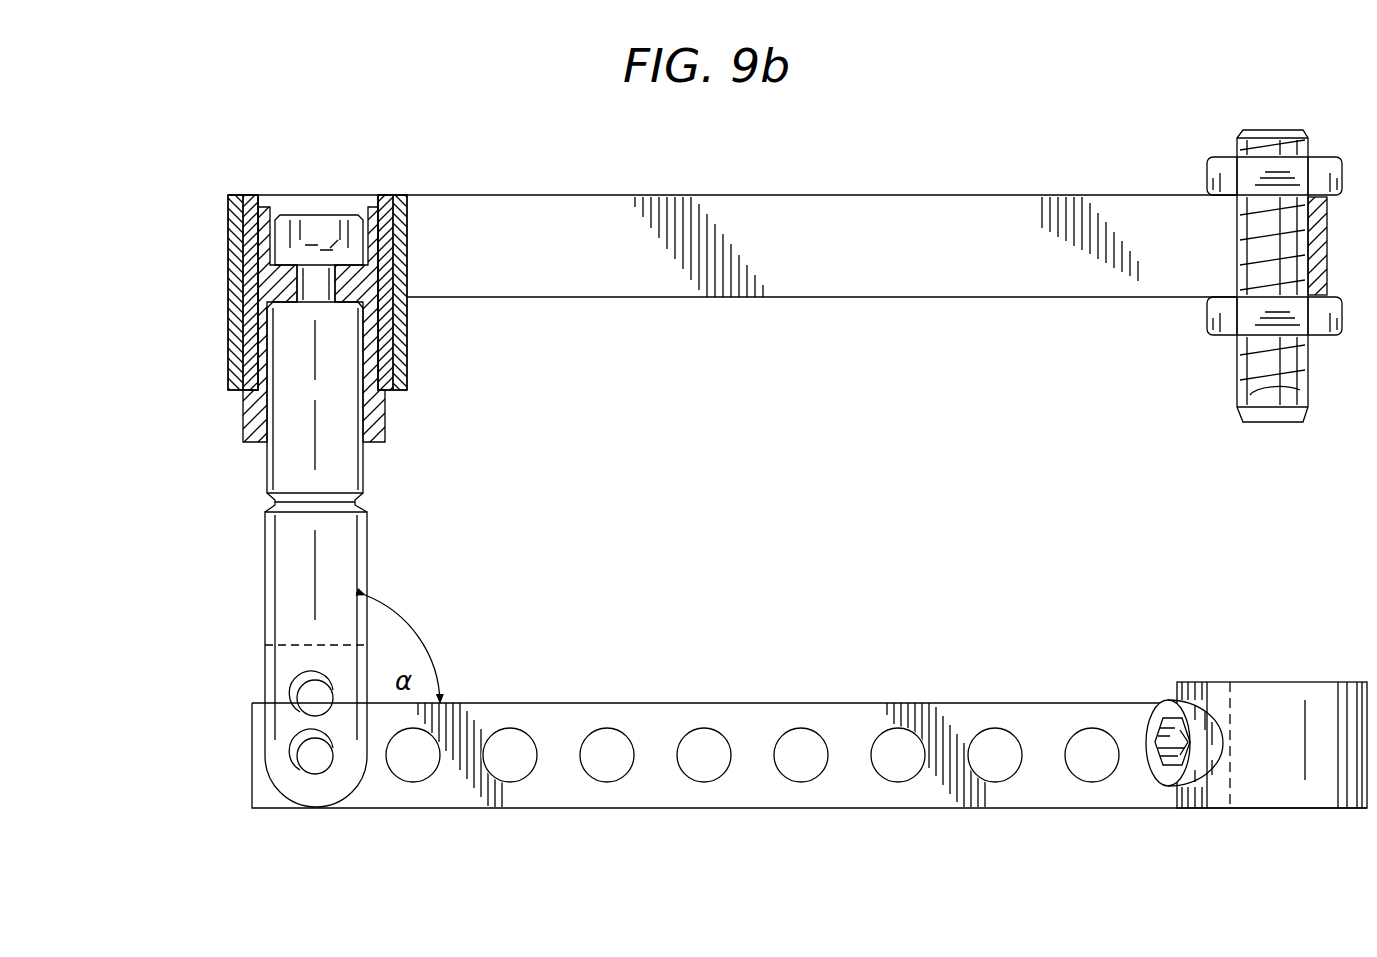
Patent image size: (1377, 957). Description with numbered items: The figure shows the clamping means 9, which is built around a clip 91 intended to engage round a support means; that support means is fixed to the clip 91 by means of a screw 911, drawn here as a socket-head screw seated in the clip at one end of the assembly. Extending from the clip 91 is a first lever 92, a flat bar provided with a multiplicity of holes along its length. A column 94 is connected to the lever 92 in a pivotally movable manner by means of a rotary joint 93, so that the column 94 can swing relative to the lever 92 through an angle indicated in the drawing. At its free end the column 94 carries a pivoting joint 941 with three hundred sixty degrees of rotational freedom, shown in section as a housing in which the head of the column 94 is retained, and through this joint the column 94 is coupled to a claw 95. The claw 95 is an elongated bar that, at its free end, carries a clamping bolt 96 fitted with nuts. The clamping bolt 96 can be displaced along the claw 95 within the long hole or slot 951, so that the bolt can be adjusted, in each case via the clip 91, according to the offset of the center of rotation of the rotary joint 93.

The clamping means 9 is at (809, 779).
The clip 91 is at (1248, 793).
The screw 911 is at (1163, 767).
The first lever 92 is at (608, 772).
The rotary joint 93 is at (306, 754).
The column 94 is at (292, 450).
The pivoting joint 941 is at (408, 253).
The claw 95 is at (913, 197).
The long hole or slot 951 is at (1125, 218).
The clamping bolt 96 is at (1308, 380).